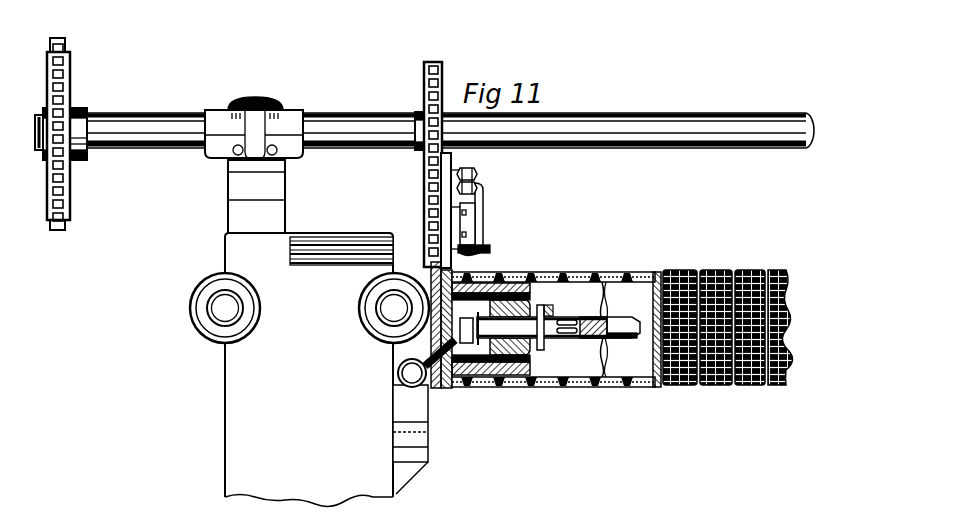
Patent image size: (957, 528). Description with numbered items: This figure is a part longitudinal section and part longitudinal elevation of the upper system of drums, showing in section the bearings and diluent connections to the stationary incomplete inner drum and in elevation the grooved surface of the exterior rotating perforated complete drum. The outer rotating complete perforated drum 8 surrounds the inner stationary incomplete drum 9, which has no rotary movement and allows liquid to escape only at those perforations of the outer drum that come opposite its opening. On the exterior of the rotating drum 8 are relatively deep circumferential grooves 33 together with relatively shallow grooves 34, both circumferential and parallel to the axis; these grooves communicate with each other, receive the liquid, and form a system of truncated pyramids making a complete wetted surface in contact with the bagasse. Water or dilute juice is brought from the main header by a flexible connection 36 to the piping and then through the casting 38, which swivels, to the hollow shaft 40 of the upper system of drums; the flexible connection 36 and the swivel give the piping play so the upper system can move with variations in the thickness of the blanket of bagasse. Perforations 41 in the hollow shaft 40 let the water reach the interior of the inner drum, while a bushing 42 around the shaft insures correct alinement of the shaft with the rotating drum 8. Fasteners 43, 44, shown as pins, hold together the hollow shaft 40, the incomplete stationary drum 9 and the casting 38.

The outer rotating complete perforated drum 8 is at (634, 329).
The inner stationary incomplete drum 9 is at (592, 329).
The deep circumferential grooves 33 is at (658, 273).
The shallow grooves 34 is at (788, 335).
The flexible connection 36 is at (459, 330).
The casting 38 is at (400, 376).
The hollow shaft 40 is at (491, 319).
The perforations 41 is at (558, 321).
The bushing 42 is at (497, 360).
The fastener 43 is at (560, 305).
The fastener 44 is at (478, 328).